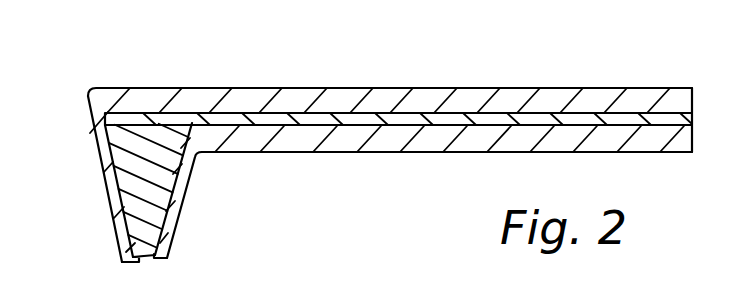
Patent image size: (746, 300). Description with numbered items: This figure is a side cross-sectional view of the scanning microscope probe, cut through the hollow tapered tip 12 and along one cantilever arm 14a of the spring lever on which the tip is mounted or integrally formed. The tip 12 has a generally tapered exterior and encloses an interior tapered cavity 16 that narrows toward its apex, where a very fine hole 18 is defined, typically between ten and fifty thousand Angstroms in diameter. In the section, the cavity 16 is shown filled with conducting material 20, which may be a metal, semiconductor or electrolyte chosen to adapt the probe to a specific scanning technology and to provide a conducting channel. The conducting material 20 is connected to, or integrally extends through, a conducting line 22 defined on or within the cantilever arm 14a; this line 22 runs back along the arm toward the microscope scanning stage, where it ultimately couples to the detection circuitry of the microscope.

The hollow tapered tip 12 is at (175, 225).
The cantilever arm 14a is at (478, 87).
The interior tapered cavity 16 is at (170, 183).
The fine hole 18 is at (127, 264).
The conducting material 20 is at (125, 150).
The conducting line 22 is at (358, 117).